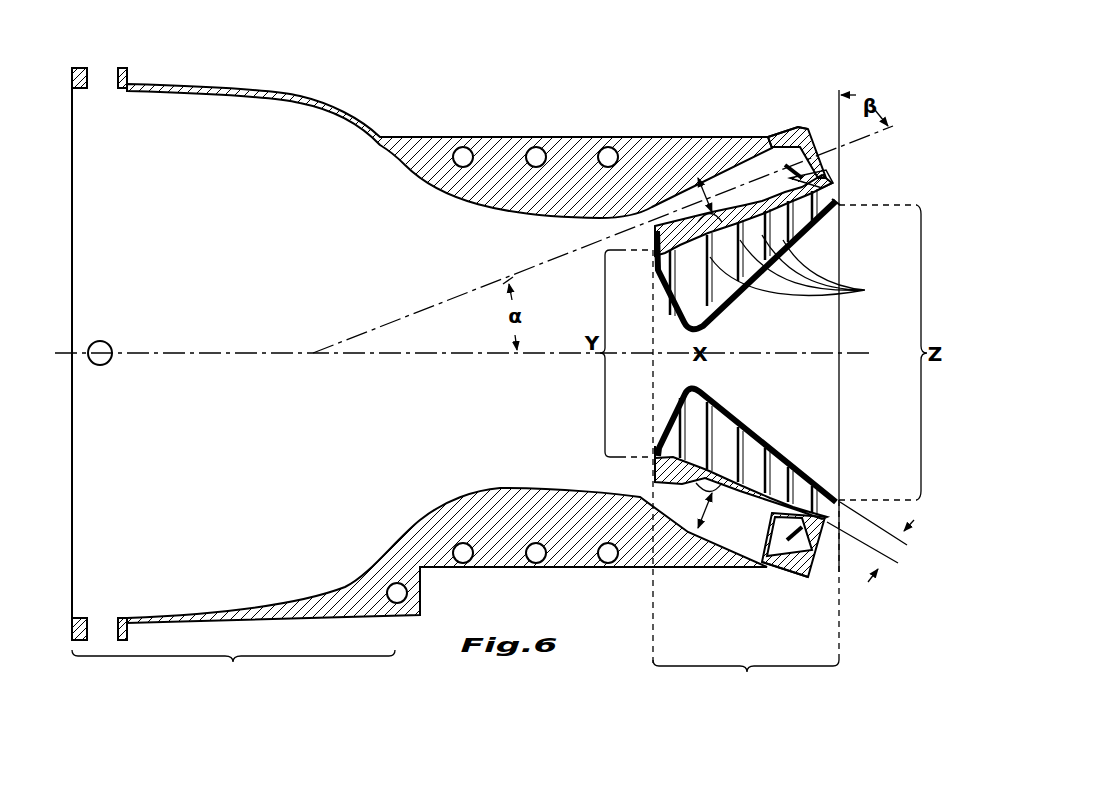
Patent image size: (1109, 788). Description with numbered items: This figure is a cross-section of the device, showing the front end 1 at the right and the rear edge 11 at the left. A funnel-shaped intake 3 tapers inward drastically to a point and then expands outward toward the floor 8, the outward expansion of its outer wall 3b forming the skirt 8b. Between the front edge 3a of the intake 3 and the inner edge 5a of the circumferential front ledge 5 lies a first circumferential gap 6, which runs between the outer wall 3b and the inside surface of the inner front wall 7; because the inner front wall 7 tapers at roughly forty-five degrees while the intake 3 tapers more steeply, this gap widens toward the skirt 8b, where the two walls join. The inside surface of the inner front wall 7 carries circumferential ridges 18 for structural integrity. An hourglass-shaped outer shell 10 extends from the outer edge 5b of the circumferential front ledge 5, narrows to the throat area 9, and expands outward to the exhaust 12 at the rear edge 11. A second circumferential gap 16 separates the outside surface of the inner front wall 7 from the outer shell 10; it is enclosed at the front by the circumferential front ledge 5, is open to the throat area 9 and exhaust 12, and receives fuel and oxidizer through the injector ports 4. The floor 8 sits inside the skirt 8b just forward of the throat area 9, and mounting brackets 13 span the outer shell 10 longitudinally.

The front end 1 is at (746, 474).
The funnel-shaped intake 3 is at (830, 372).
The front edge 3a is at (840, 325).
The outer wall 3b is at (768, 563).
The fuel/oxidizer injector port 4 is at (817, 168).
The circumferential front ledge 5 is at (807, 147).
The inner edge 5a is at (827, 183).
The outer edge 5b is at (803, 127).
The first circumferential gap 6 is at (870, 551).
The inner front wall 7 is at (728, 455).
The floor 8 is at (656, 303).
The skirt 8b is at (758, 197).
The throat area 9 is at (517, 380).
The outer shell 10 is at (283, 92).
The rear edge 11 is at (72, 116).
The exhaust 12 is at (233, 669).
The mounting bracket 13 is at (506, 152).
The second circumferential gap 16 is at (701, 178).
The circumferential ridges 18 is at (802, 269).